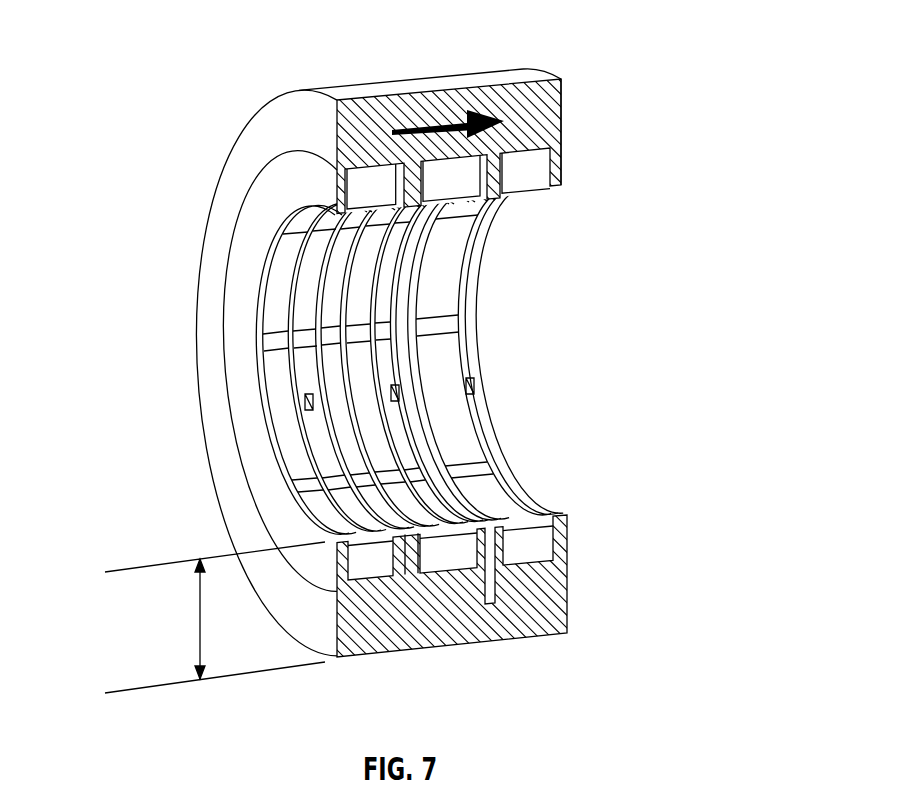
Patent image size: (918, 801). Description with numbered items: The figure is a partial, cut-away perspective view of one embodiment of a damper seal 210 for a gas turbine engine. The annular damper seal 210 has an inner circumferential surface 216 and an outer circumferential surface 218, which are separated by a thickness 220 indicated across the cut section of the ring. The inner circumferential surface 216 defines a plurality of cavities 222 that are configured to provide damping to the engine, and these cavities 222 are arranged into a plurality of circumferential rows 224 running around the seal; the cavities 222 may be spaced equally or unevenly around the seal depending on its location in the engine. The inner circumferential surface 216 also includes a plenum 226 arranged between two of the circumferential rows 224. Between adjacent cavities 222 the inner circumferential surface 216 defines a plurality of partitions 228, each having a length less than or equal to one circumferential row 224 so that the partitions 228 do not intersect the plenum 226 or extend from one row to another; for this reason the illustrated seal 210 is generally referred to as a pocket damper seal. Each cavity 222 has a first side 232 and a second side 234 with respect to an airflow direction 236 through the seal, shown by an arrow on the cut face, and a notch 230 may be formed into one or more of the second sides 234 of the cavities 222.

The damper seal 210 is at (652, 123).
The inner circumferential surface 216 is at (561, 186).
The outer circumferential surface 218 is at (400, 92).
The thickness 220 is at (200, 626).
The cavities 222 is at (317, 510).
The circumferential rows 224 is at (442, 556).
The plenum 226 is at (523, 546).
The partitions 228 is at (433, 327).
The notch 230 is at (476, 383).
The first side 232 is at (498, 455).
The second side 234 is at (487, 440).
The airflow direction 236 is at (442, 118).